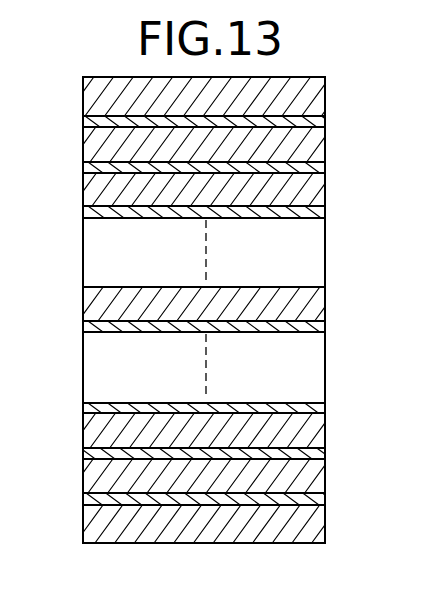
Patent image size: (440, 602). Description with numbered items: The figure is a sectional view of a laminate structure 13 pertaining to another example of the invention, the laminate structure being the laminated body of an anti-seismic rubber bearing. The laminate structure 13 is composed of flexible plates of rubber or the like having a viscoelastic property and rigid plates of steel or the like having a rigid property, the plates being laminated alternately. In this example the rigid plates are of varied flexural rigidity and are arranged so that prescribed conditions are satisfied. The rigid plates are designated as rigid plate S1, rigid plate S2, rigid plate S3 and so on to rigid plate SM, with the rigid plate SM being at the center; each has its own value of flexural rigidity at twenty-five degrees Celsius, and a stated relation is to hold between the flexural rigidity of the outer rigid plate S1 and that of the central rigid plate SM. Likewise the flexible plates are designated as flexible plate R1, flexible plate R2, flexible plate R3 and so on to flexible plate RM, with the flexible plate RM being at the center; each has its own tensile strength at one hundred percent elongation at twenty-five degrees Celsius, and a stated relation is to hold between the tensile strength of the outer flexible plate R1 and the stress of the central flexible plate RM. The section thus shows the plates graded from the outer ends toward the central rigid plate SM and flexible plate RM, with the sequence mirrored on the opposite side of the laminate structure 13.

The laminate structure 13 is at (204, 310).
The flexible plate R1 is at (204, 310).
The flexible plate R2 is at (204, 310).
The flexible plate R3 is at (204, 310).
The flexible plate RM is at (204, 304).
The rigid plate S1 is at (322, 122).
The rigid plate S2 is at (322, 168).
The rigid plate S3 is at (321, 212).
The rigid plate SM is at (313, 327).